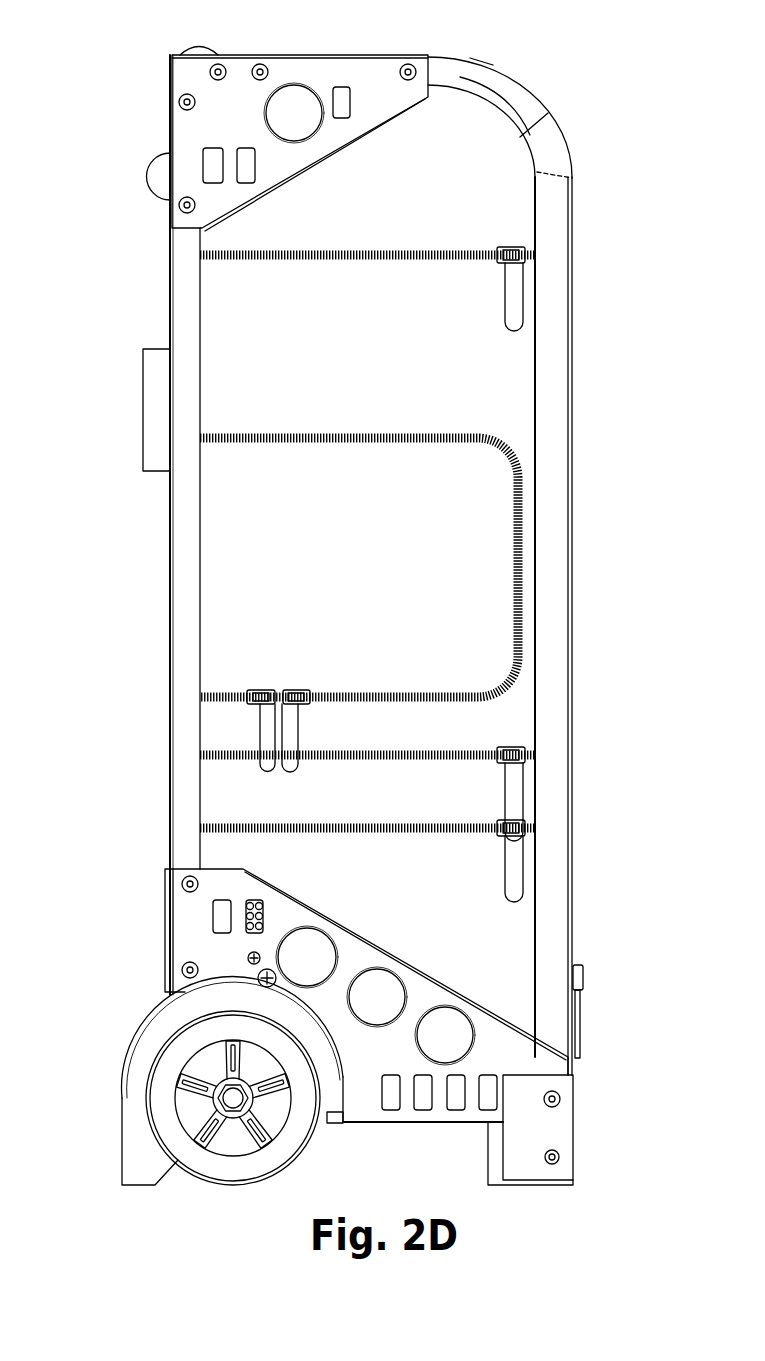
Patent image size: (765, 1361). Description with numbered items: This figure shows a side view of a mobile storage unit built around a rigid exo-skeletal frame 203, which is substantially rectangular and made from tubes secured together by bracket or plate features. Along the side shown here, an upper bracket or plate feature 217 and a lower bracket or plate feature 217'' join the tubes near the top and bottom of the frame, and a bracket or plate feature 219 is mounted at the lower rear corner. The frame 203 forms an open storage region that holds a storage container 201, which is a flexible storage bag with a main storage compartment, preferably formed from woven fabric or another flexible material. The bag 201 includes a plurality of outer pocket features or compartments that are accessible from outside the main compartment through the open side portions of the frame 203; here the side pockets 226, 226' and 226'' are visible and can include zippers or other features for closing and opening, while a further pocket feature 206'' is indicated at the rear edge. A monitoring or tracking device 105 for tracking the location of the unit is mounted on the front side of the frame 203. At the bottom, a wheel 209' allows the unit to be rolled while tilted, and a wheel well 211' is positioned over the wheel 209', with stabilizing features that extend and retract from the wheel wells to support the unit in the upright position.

The storage container 201 is at (347, 362).
The rigid exo-skeletal frame 203 is at (517, 102).
The bracket or plate feature 217 is at (300, 118).
The lower side plate 217'' is at (324, 995).
The outer pocket feature or compartment 226 is at (317, 289).
The outer pocket feature or compartment 226' is at (301, 605).
The outer pocket feature or compartment 226'' is at (307, 824).
The monitoring or tracking device 105 is at (143, 400).
The outer pocket feature or compartment 206'' is at (618, 1011).
The bracket or plate feature 219 is at (575, 1125).
The fender 211' is at (186, 1081).
The wheel 209' is at (233, 1134).